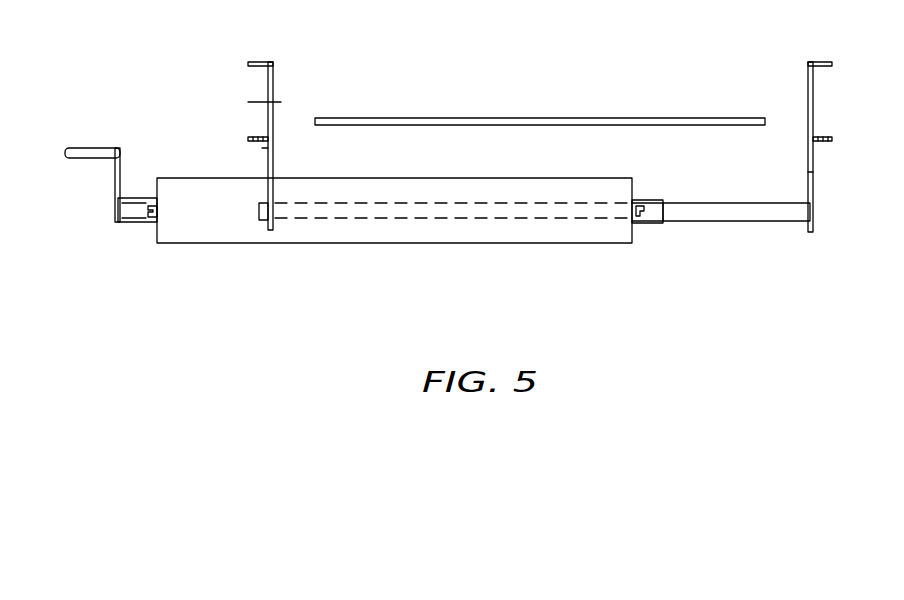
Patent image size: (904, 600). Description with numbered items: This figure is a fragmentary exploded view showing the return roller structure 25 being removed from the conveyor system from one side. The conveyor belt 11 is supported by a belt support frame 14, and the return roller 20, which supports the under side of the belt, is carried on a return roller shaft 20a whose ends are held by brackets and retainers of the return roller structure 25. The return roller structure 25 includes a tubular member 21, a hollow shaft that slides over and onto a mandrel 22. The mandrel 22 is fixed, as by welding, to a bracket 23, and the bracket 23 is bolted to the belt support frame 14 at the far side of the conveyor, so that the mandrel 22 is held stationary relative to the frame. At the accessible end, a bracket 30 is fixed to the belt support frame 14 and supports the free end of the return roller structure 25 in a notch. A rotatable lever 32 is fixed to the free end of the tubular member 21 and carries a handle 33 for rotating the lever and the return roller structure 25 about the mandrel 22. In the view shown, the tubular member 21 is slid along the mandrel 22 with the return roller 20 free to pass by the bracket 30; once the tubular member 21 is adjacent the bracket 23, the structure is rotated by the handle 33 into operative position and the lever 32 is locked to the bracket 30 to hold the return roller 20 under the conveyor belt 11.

The endless troughing conveyor belt 11 is at (575, 107).
The belt support frame 14 is at (856, 100).
The return roller 20 is at (228, 226).
The return roller shaft 20a is at (645, 212).
The tubular member 21 is at (135, 225).
The mandrel 22 is at (712, 226).
The bracket 23 is at (817, 173).
The return roller structure 25 is at (363, 268).
The bracket 30 is at (262, 164).
The lever 32 is at (110, 185).
The handle 33 is at (80, 160).